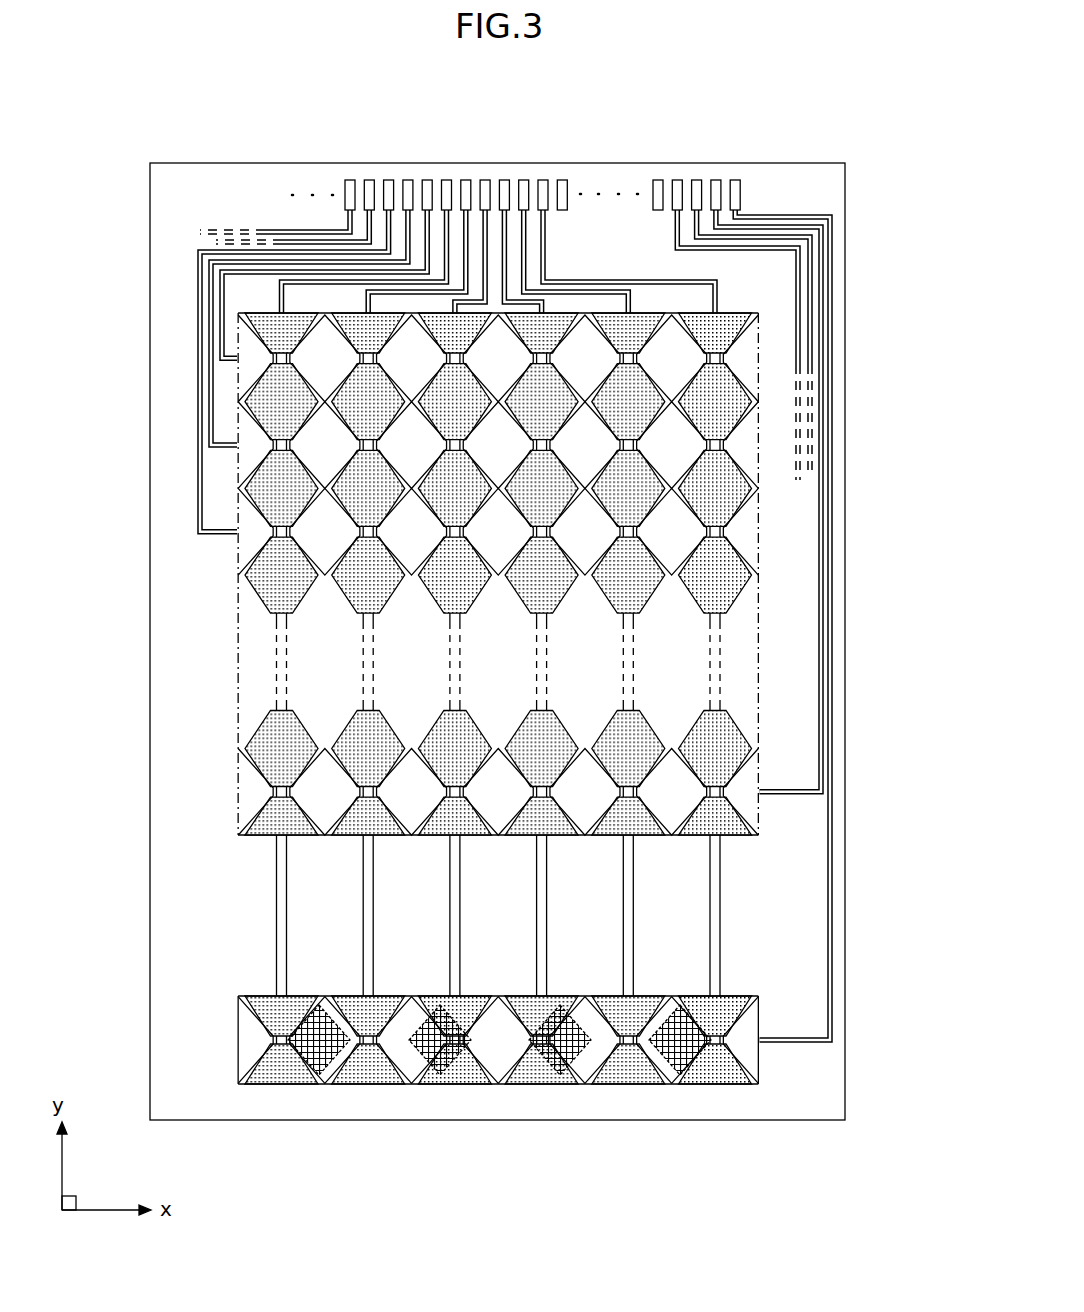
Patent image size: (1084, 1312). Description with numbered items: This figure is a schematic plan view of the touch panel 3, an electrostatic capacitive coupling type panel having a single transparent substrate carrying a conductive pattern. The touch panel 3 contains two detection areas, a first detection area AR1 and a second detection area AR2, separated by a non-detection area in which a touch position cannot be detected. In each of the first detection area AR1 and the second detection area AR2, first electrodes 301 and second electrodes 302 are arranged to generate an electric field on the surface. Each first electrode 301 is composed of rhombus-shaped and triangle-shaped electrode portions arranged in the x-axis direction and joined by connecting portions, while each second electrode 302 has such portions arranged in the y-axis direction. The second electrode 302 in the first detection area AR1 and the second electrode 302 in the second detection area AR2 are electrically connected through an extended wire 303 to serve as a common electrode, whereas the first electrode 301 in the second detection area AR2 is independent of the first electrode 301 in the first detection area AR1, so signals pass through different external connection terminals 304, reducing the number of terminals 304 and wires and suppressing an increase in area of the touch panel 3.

The touch panel 3 is at (851, 200).
The first electrode 301 is at (735, 352).
The second electrode 302 is at (280, 490).
The extended wire 303 is at (273, 883).
The external connection terminal 304 is at (408, 192).
The first detection area AR1 is at (233, 683).
The second detection area AR2 is at (305, 1090).